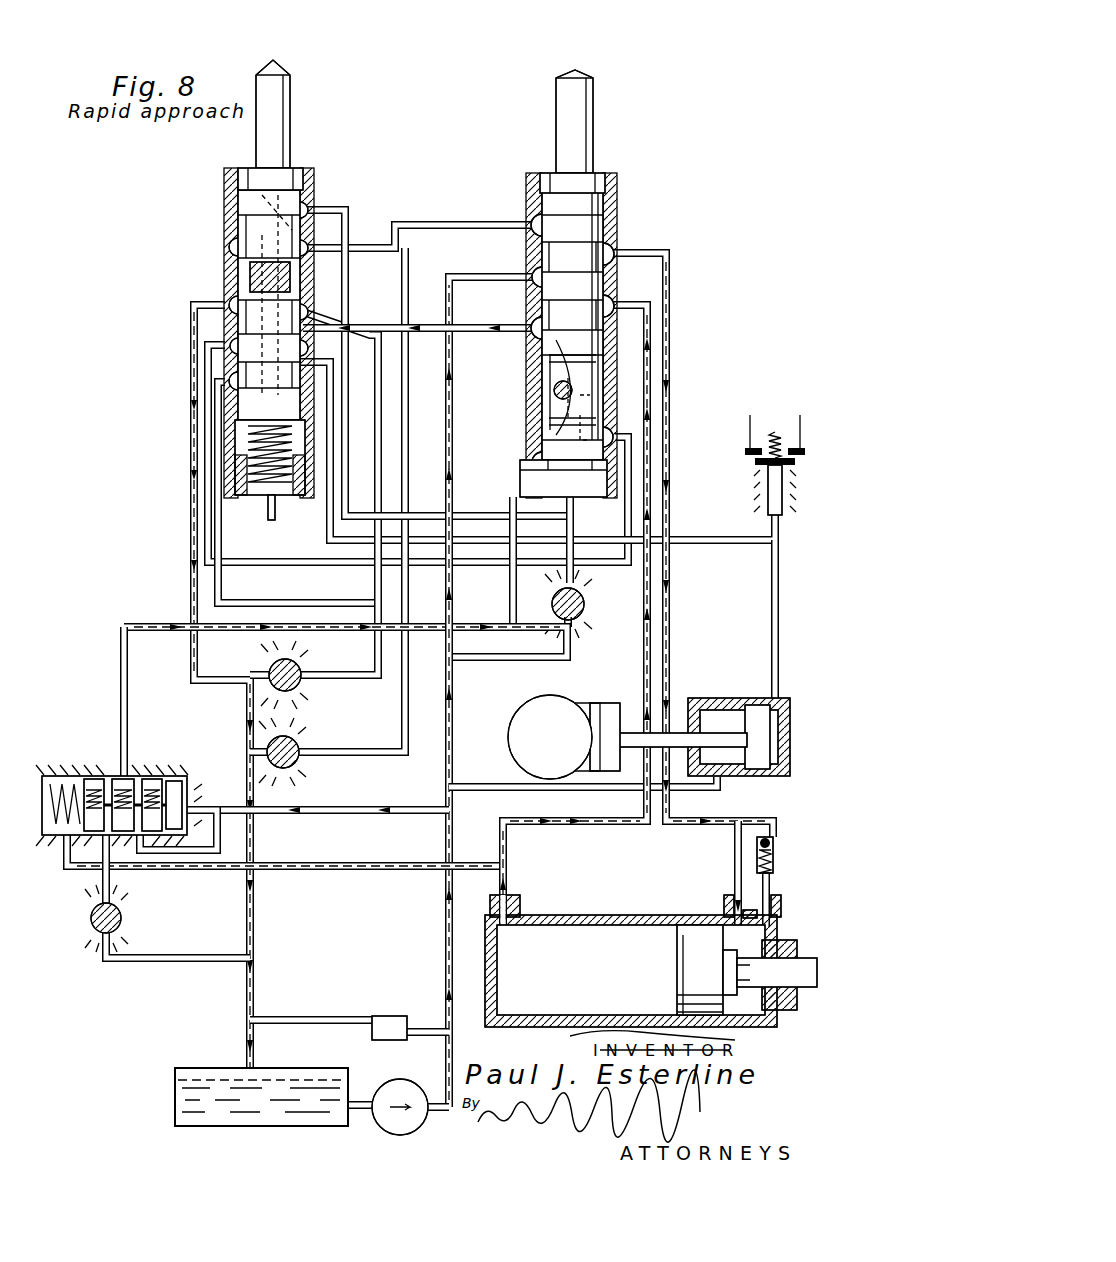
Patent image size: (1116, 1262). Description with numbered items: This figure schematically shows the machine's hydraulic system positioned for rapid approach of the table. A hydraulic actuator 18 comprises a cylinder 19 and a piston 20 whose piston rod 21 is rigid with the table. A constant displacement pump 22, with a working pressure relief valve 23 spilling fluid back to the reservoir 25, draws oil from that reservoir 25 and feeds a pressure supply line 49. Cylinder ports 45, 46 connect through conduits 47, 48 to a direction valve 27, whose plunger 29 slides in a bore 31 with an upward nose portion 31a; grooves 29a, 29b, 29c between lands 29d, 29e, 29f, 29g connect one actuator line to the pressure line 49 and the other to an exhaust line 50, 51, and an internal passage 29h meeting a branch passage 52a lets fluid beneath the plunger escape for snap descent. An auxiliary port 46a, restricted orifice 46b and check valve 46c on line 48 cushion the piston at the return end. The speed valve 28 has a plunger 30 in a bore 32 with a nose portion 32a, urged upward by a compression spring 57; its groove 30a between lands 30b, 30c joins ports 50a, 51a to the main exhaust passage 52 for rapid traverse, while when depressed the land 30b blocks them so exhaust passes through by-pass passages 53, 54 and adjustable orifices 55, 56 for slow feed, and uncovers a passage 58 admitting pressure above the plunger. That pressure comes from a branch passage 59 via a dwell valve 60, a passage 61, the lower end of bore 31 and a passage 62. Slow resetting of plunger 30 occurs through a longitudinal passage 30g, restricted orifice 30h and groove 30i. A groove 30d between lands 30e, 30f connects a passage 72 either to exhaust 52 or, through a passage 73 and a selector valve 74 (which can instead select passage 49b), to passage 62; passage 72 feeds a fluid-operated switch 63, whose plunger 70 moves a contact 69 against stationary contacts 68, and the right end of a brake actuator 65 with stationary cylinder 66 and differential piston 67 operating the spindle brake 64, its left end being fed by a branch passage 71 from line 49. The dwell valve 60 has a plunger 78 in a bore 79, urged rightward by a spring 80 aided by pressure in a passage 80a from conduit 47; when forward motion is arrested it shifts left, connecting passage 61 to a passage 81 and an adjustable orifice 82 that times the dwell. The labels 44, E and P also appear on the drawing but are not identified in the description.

The hydraulic actuator 18 is at (651, 943).
The cylinder 19 is at (606, 914).
The piston 20 is at (674, 990).
The piston rod 21 is at (782, 1000).
The constant displacement pump 22 is at (385, 1128).
The working pressure relief valve 23 is at (383, 1016).
The reservoir 25 is at (173, 1098).
The direction valve 27 is at (585, 268).
The speed valve 28 is at (259, 279).
The plunger 29 is at (579, 325).
The annular groove 29a is at (604, 214).
The annular groove 29b is at (614, 266).
The annular groove 29c is at (612, 316).
The land 29d is at (538, 180).
The land 29e is at (544, 246).
The land 29f is at (532, 296).
The land 29g is at (542, 348).
The passage 29h is at (605, 386).
The plunger 30 is at (256, 268).
The annular groove 30a is at (302, 270).
The land 30b is at (230, 198).
The land 30c is at (306, 316).
The groove 30d is at (304, 356).
The land 30e is at (304, 344).
The land 30f is at (224, 380).
The longitudinal passage 30g is at (260, 215).
The restricted orifice 30h is at (232, 286).
The annular groove 30i is at (304, 330).
The bore 31 is at (592, 121).
The nose portion 31a is at (582, 72).
The bore 32 is at (306, 178).
The nose portion 32a is at (224, 306).
The ball check 44 is at (554, 388).
The supply port 45 is at (510, 930).
The supply port 46 is at (724, 912).
The auxiliary port 46a is at (770, 918).
The restricted orifice 46b is at (733, 888).
The check valve 46c is at (778, 840).
The conduit 47 is at (582, 827).
The conduit 48 is at (676, 300).
The pressure supply line 49 is at (470, 280).
The passage 49b is at (495, 660).
The exhaust line 50 is at (372, 325).
The port 50a is at (224, 248).
The exhaust line 51 is at (442, 228).
The port 51a is at (318, 238).
The main exhaust passage 52 is at (189, 468).
The branch passage 52a is at (300, 566).
The by-pass passage 53 is at (336, 678).
The by-pass passage 54 is at (364, 756).
The adjustable restricted orifice 55 is at (300, 662).
The adjustable restricted orifice 56 is at (298, 745).
The compression spring 57 is at (262, 496).
The passage 58 is at (342, 208).
The branch passage 59 is at (342, 815).
The dwell valve 60 is at (119, 803).
The passage 61 is at (121, 668).
The passage 62 is at (576, 522).
The switch 63 is at (768, 451).
The brake mechanism 64 is at (583, 692).
The hydraulic actuator 65 is at (753, 714).
The stationary cylinder 66 is at (780, 700).
The piston 67 is at (772, 730).
The stationary contacts 68 is at (746, 456).
The movable contact 69 is at (754, 466).
The plunger 70 is at (766, 498).
The branch passage 71 is at (494, 782).
The passage 72 is at (772, 562).
The passage 73 is at (520, 600).
The selector valve 74 is at (586, 598).
The plunger 78 is at (178, 796).
The bore 79 is at (70, 778).
The compression spring 80 is at (62, 840).
The passage 80a is at (349, 871).
The passage 81 is at (102, 882).
The adjustable orifice 82 is at (89, 908).
The exhaust conduit E is at (641, 640).
The pressure conduit P is at (690, 278).